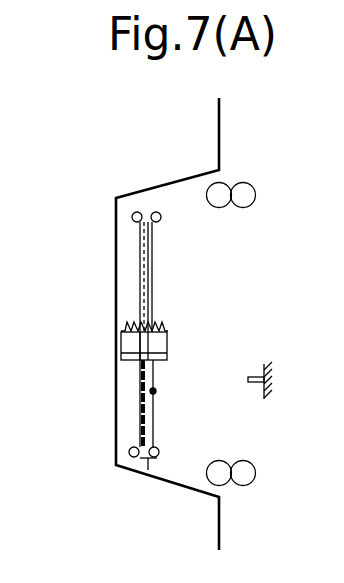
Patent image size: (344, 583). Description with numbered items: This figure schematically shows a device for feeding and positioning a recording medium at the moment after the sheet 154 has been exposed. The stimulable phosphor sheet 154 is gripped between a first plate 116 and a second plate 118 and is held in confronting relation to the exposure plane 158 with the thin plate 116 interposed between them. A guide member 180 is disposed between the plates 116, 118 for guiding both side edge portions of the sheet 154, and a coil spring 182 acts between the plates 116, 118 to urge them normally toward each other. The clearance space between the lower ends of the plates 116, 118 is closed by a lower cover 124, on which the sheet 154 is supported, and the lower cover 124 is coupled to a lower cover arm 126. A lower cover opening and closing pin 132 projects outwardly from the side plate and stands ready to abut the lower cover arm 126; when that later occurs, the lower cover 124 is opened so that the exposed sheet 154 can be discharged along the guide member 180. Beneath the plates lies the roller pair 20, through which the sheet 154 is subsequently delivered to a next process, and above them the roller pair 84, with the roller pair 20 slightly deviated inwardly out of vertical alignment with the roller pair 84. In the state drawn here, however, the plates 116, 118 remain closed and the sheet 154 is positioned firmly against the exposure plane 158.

The exposure plane 158 is at (113, 296).
The roller pair 84 is at (256, 192).
The roller pair 20 is at (256, 478).
The second plate 118 is at (150, 277).
The sheet 154 is at (143, 246).
The coil spring 182 is at (158, 320).
The first plate 116 is at (140, 380).
The guide member 180 is at (140, 427).
The lower cover arm 126 is at (157, 418).
The lower cover 124 is at (147, 462).
The lower cover opening and closing pin 132 is at (255, 378).